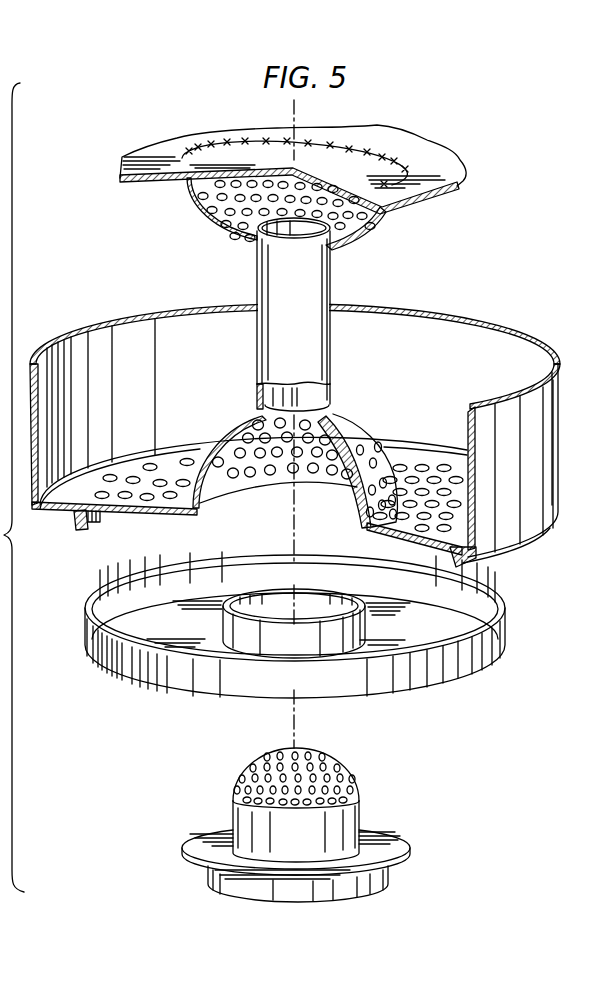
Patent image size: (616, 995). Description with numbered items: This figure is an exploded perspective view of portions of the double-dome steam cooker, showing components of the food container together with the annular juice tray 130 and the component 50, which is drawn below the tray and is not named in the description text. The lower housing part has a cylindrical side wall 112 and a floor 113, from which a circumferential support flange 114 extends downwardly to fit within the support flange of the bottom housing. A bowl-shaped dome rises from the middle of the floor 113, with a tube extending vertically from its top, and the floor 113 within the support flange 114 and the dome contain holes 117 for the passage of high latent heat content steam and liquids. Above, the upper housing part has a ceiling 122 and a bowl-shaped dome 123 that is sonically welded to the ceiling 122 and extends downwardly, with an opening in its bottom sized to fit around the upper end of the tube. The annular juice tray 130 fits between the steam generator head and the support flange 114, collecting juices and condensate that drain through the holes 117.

The ceiling 122 is at (437, 152).
The bowl-shaped dome 123 is at (210, 222).
The cylindrical side wall 112 is at (530, 416).
The holes 117 is at (420, 470).
The circumferential support flange 114 is at (98, 518).
The floor 113 is at (57, 516).
The annular juice tray 130 is at (510, 621).
The drain strainer insert 50 is at (416, 848).